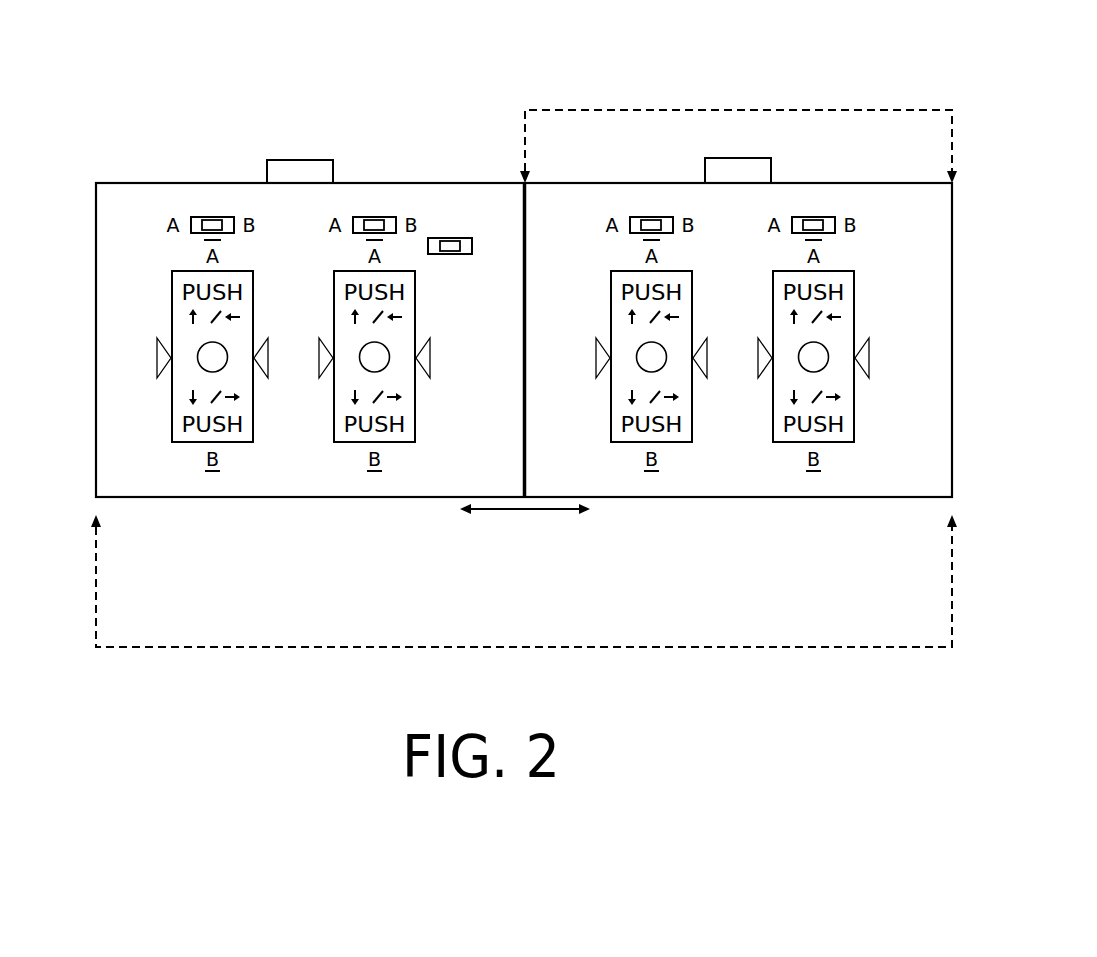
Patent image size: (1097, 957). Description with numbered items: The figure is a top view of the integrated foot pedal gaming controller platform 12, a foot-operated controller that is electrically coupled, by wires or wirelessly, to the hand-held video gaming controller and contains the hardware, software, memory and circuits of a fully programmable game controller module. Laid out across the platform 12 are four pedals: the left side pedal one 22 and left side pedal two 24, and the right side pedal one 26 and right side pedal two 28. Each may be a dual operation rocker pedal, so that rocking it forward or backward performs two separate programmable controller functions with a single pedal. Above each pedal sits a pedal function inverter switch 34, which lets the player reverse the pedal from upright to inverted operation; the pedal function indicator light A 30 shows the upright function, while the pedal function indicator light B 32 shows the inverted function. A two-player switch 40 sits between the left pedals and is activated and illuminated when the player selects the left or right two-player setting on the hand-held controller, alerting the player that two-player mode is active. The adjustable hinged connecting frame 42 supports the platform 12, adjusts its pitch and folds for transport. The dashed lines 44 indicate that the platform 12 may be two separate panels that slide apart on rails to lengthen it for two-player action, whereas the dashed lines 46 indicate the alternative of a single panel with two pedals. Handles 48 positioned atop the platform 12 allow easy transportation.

The integrated foot pedal gaming controller platform 12 is at (752, 497).
The left side pedal "1" 22 is at (238, 442).
The left side pedal "2" 24 is at (395, 442).
The right side pedal "1" 26 is at (670, 442).
The right side pedal "2" 28 is at (826, 442).
The pedal function indicator light "A" 30 is at (202, 257).
The pedal function indicator light "B" 32 is at (205, 465).
The pedal function inverter switch 34 is at (208, 217).
The two-player switch 40 is at (455, 238).
The adjustable hinged connecting frame 42 is at (523, 512).
The dashed lines indicating two separate panels 44 is at (340, 647).
The dashed lines indicating single panel 46 is at (715, 110).
The handle 48 is at (295, 160).